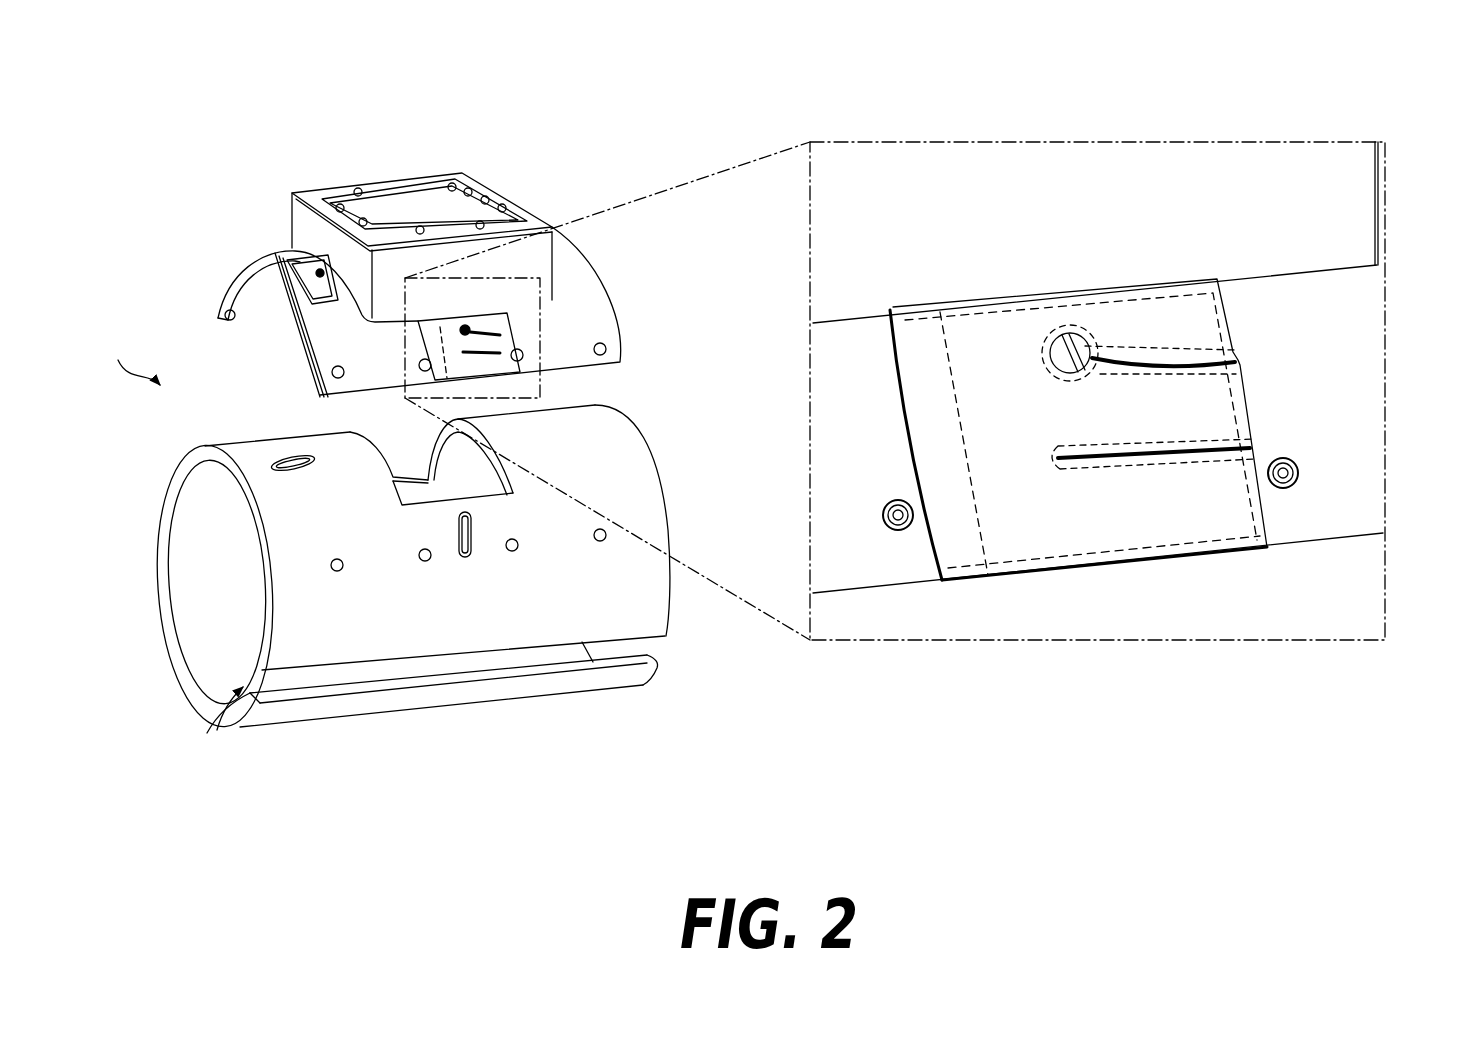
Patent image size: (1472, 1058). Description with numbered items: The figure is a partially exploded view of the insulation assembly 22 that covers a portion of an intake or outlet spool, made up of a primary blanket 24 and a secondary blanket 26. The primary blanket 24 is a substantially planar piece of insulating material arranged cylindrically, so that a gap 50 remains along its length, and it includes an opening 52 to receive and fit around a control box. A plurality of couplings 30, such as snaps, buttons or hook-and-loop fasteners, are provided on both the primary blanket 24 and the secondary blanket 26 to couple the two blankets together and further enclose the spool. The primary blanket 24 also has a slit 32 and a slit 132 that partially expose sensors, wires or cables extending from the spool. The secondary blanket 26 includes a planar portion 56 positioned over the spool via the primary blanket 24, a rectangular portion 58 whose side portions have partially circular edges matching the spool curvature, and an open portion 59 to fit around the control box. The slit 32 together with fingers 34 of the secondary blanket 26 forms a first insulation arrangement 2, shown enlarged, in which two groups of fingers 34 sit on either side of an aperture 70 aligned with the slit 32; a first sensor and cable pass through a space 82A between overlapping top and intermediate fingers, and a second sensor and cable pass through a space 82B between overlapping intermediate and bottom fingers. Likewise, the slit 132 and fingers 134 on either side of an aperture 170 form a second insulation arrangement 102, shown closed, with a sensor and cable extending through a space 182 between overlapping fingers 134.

The first insulation arrangement 2 is at (535, 345).
The insulation assembly 22 is at (127, 360).
The primary blanket 24 is at (408, 708).
The secondary blanket 26 is at (548, 232).
The couplings 30 is at (222, 318).
The slit 32 is at (466, 558).
The fingers 34 is at (490, 320).
The gap 50 is at (215, 731).
The opening 52 is at (412, 462).
The planar portion 56 is at (598, 300).
The rectangular portion 58 is at (510, 192).
The open portion 59 is at (421, 206).
The aperture 70 is at (1092, 348).
The space 82A is at (1175, 357).
The space 82B is at (1160, 466).
The second insulation arrangement 102 is at (292, 312).
The slit 132 is at (290, 458).
The fingers 134 is at (328, 302).
The aperture 170 is at (315, 270).
The space 182 is at (320, 265).